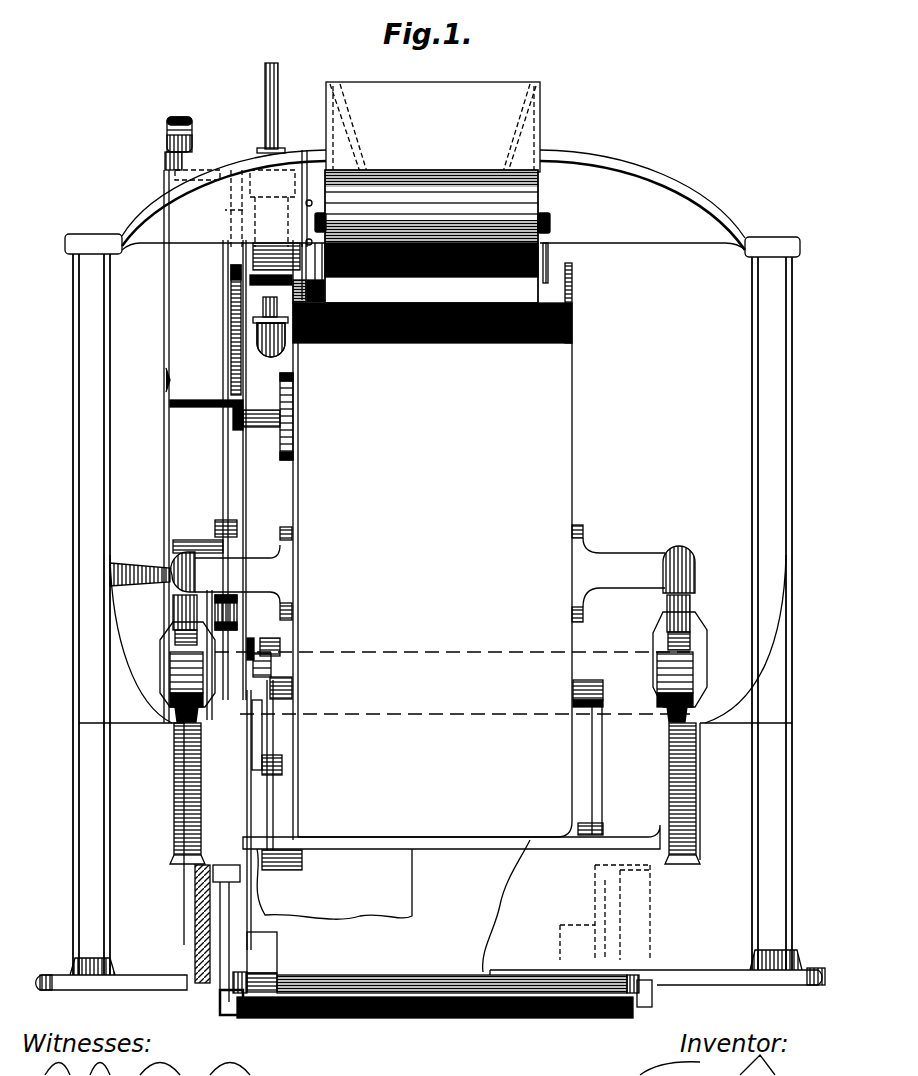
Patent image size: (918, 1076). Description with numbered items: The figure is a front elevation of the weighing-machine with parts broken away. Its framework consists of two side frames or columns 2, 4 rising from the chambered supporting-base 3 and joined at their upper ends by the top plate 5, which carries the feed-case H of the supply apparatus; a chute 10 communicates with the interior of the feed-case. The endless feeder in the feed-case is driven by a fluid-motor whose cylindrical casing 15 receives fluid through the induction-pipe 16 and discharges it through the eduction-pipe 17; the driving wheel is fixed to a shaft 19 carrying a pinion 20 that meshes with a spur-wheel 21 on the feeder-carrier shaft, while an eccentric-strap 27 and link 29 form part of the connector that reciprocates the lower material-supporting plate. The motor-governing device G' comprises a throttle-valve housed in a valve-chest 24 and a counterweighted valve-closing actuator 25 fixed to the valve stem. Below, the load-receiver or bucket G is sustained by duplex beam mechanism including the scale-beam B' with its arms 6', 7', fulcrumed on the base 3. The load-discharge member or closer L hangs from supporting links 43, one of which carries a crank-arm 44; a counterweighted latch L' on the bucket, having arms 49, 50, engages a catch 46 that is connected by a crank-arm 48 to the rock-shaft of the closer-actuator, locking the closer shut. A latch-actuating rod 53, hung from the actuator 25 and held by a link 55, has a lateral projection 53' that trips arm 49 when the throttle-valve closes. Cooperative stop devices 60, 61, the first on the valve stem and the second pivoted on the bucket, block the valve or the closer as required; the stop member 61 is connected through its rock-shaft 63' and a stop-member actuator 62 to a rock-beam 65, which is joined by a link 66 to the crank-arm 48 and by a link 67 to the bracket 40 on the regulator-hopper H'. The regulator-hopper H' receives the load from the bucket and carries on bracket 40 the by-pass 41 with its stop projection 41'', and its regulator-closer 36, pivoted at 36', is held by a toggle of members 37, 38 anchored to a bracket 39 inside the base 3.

The side frame or column 2 is at (125, 604).
The chambered supporting-base 3 is at (718, 796).
The side frame or column 4 is at (750, 603).
The top plate 5 is at (622, 162).
The feed-case H is at (433, 127).
The chute 10 is at (532, 127).
The induction-pipe 16 is at (277, 92).
The counterweighted valve-closing actuator 25 is at (178, 118).
The motor-governing device G' is at (205, 136).
The spur-wheel 21 is at (304, 185).
The eccentric-strap 27 is at (312, 200).
The valve-chest 24 is at (255, 185).
The stop device 60 is at (240, 212).
The shaft 19 is at (250, 258).
The cylindrical casing 15 is at (262, 270).
The link 29 is at (340, 262).
The pinion 20 is at (300, 268).
The latch-actuating rod 53 is at (144, 446).
The lateral projection 53' is at (146, 378).
The stop-member actuator 62 is at (224, 313).
The rock-shaft 63' is at (214, 330).
The stop member 61 is at (235, 333).
The eduction-pipe 17 is at (287, 346).
The latch arm 49 is at (207, 400).
The latch arm 50 is at (243, 441).
The counterweighted latch L' is at (270, 416).
The load-receiver G is at (432, 540).
The catch 46 is at (240, 545).
The link 55 is at (141, 568).
The link 67 is at (240, 602).
The rock-beam 65 is at (176, 608).
The beam-arm 6' is at (157, 648).
The scale-beam B' is at (177, 664).
The link 66 is at (176, 694).
The bracket 40 is at (247, 788).
The discharge-member-actuating by-pass 41 is at (297, 628).
The crank-arm 44 is at (272, 680).
The stop projection 41'' is at (303, 688).
The crank-arm 48 is at (262, 733).
The discharge-member-supporting links 43 is at (273, 808).
The beam-arm 7' is at (650, 694).
The load-discharge member L is at (451, 890).
The regulator-hopper H' is at (436, 935).
The lug or bracket 39 is at (216, 866).
The toggle link 38 is at (222, 903).
The closer pivot 36' is at (283, 962).
The regulator-closer 36 is at (436, 1005).
The toggle crank-arm 37 is at (222, 992).